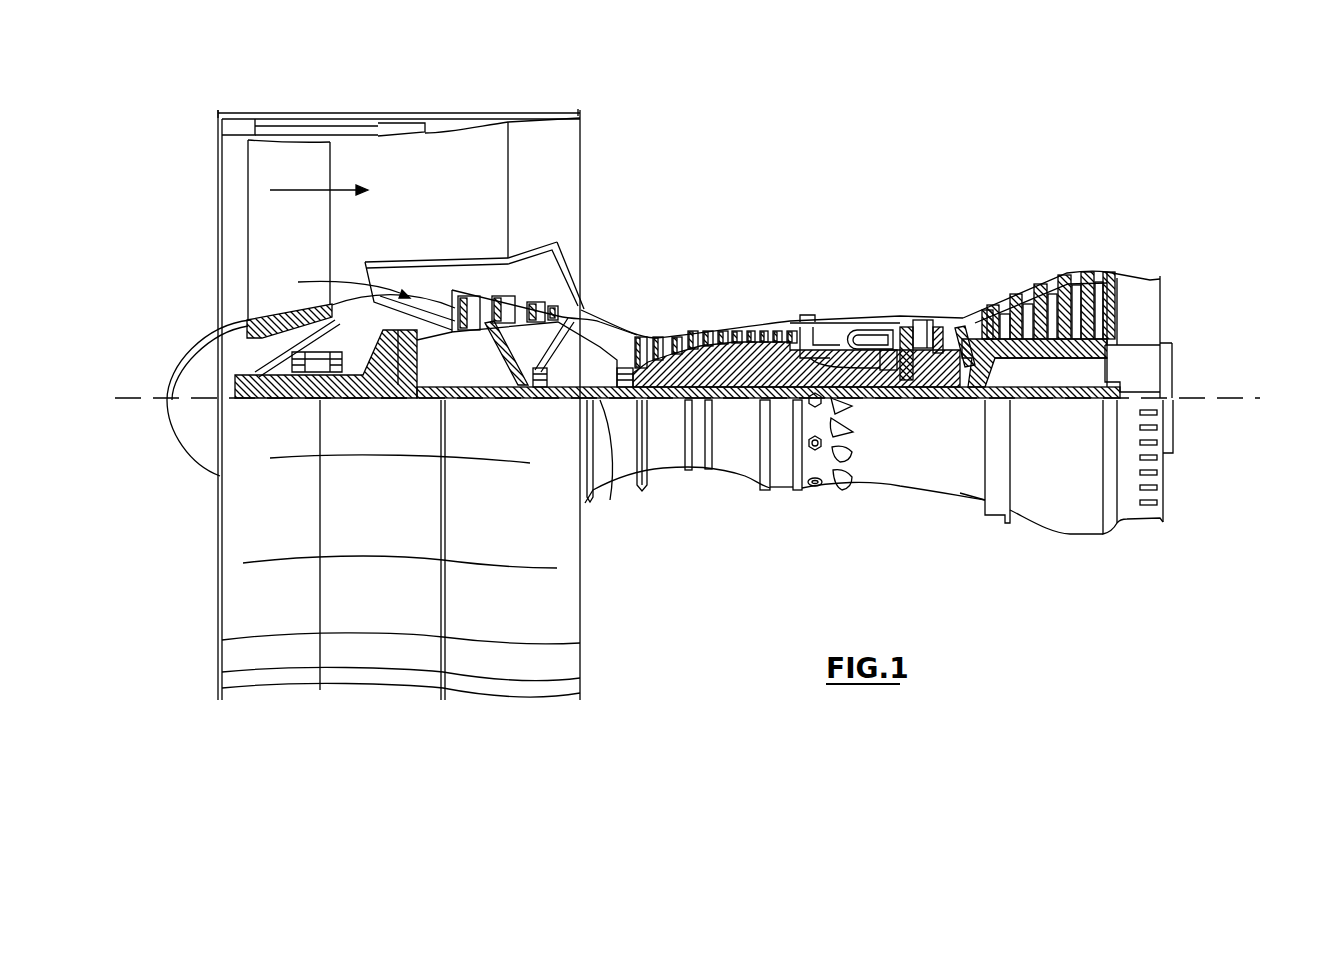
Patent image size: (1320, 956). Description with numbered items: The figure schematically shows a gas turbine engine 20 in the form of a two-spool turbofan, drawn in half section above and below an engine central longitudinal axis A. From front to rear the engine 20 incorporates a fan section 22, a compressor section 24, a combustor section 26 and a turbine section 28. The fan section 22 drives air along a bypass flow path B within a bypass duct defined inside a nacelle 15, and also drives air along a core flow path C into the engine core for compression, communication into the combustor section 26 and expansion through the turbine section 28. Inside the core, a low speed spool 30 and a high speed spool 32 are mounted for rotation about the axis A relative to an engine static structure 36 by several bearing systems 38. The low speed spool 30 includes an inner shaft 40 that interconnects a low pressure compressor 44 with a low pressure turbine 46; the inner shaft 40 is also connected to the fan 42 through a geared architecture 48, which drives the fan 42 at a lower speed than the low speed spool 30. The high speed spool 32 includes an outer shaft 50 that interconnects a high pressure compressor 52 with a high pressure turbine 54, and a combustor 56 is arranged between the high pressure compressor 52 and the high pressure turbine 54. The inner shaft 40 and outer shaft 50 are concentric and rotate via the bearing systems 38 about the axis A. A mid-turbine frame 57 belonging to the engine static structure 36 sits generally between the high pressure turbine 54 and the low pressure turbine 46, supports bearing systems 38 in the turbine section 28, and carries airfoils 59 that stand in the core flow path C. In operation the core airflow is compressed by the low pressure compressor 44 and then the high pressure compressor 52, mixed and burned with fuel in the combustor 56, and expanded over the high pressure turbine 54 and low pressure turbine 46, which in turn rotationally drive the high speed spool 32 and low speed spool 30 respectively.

The nacelle 15 is at (398, 121).
The gas turbine engine 20 is at (868, 160).
The fan section 22 is at (328, 100).
The compressor section 24 is at (636, 300).
The combustor section 26 is at (855, 292).
The turbine section 28 is at (1008, 252).
The low speed spool 30 is at (741, 410).
The high speed spool 32 is at (781, 380).
The engine static structure 36 is at (781, 495).
The bearing systems 38 is at (543, 398).
The inner shaft 40 is at (603, 412).
The fan 42 is at (303, 243).
The low pressure compressor 44 is at (507, 308).
The low pressure turbine 46 is at (1050, 283).
The geared architecture 48 is at (407, 398).
The outer shaft 50 is at (868, 398).
The high pressure compressor 52 is at (716, 366).
The high pressure turbine 54 is at (920, 318).
The combustor 56 is at (857, 340).
The mid-turbine frame 57 is at (968, 305).
The airfoils 59 is at (995, 368).
The engine central longitudinal axis A is at (1250, 398).
The bypass flow path B is at (303, 188).
The core flow path C is at (345, 285).